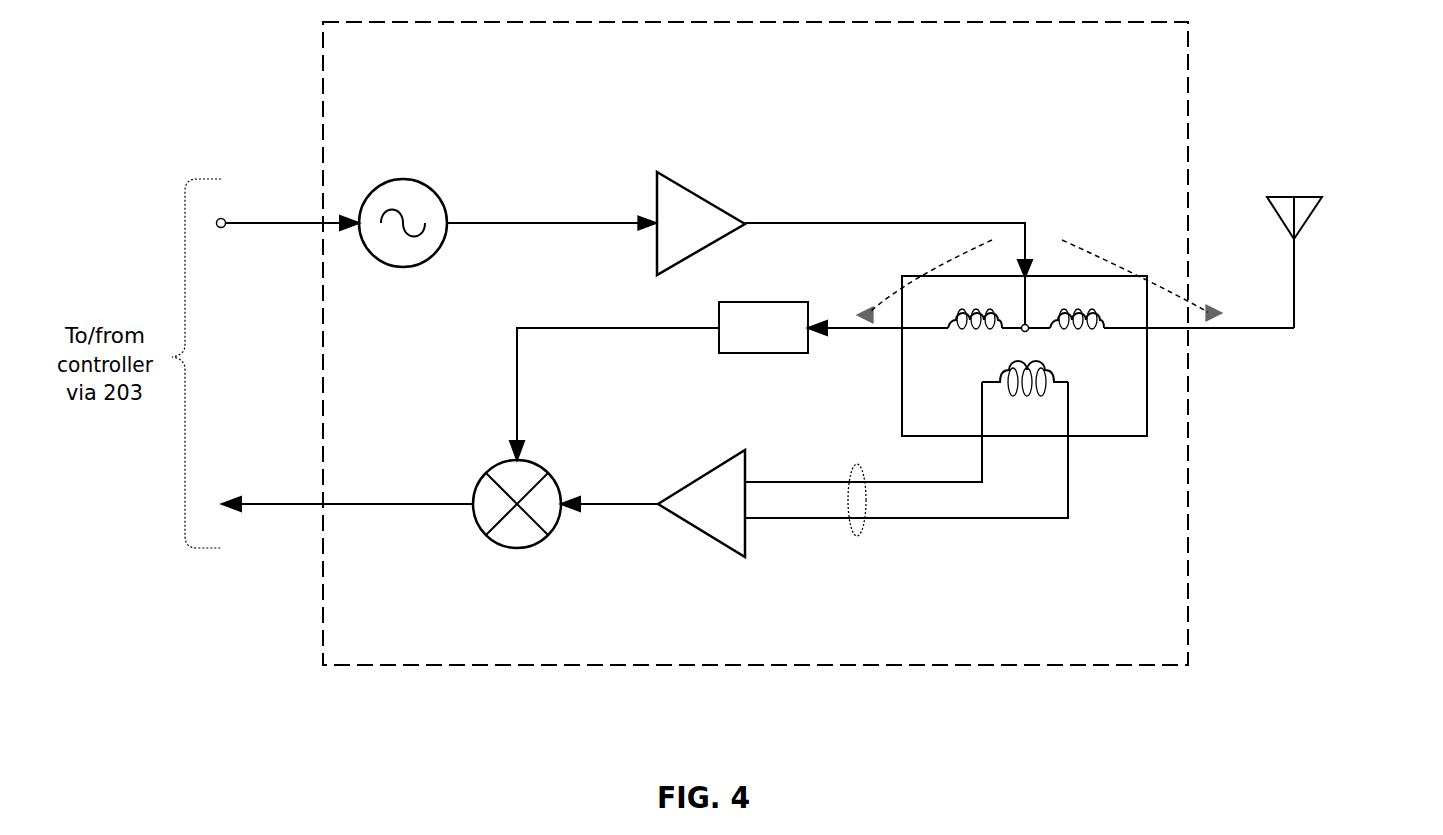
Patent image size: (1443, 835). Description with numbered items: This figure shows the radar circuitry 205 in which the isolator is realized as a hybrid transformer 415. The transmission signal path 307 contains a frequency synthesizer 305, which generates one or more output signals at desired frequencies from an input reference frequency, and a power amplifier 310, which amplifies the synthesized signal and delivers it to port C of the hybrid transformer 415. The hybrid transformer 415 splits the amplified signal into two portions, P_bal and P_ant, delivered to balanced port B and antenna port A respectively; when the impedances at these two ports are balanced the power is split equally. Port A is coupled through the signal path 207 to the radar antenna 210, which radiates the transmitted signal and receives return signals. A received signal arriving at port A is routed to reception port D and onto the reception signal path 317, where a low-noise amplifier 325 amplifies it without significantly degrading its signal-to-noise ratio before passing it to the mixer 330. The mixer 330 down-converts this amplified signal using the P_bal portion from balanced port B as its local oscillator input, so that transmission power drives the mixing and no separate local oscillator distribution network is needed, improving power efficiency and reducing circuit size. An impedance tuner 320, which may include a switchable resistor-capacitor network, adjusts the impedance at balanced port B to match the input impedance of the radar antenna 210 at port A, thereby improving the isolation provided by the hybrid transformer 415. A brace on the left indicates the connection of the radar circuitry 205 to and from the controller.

The radar circuitry 205 is at (862, 54).
The frequency synthesizer 305 is at (405, 178).
The transmission signal path 307 is at (528, 222).
The power amplifier 310 is at (694, 194).
The impedance tuner 320 is at (780, 354).
The low-noise amplifier 325 is at (690, 484).
The mixer 330 is at (476, 487).
The reception signal path 317 is at (853, 540).
The hybrid transformer 415 is at (1113, 437).
The signal path 207 is at (1277, 330).
The radar antenna 210 is at (1328, 174).